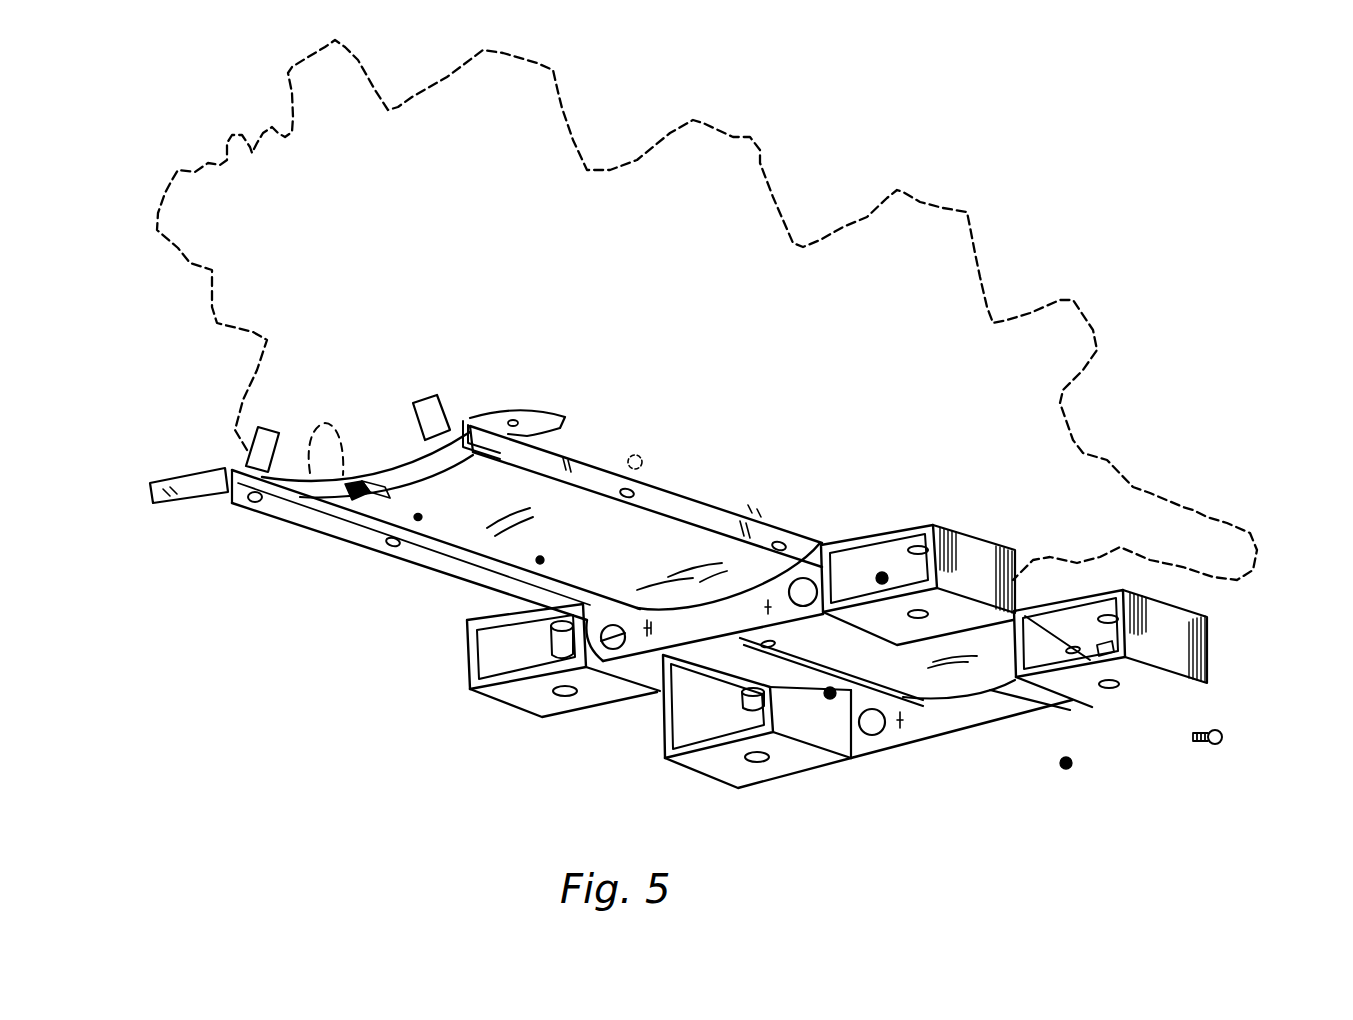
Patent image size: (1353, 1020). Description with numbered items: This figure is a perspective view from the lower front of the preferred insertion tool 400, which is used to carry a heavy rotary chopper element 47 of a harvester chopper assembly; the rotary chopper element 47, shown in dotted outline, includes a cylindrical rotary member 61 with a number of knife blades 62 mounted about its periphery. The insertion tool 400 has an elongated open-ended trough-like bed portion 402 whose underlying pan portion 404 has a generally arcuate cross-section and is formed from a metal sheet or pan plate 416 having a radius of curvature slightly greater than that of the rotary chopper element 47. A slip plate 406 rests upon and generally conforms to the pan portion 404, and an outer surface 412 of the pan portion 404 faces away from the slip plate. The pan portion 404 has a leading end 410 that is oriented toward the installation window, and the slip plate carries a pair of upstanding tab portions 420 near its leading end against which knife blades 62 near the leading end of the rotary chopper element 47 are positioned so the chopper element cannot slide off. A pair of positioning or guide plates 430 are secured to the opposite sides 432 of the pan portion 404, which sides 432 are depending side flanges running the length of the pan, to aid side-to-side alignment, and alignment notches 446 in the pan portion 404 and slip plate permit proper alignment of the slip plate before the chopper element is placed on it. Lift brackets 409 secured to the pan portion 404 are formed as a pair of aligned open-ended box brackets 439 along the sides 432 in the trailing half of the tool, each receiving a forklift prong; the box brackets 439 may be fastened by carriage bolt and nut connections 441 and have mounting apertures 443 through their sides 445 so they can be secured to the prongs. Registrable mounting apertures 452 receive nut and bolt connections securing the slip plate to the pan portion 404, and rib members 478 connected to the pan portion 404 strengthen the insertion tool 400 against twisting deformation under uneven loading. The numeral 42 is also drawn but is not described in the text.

The rotary chopper element 47 is at (762, 157).
The rotary member 61 is at (885, 303).
The knife blades 62 is at (1068, 342).
The insertion tool 400 is at (183, 521).
The bed portion 402 is at (357, 527).
The pan portion 404 is at (450, 520).
The slip plate 406 is at (300, 476).
The lift brackets 409 is at (967, 763).
The leading end 410 is at (392, 462).
The outer surface 412 is at (342, 561).
The pan plate 416 is at (366, 462).
The tab portions 420 is at (243, 470).
The tab 42 is at (445, 400).
The guide plates 430 is at (197, 473).
The sides 432 is at (588, 473).
The box brackets 439 is at (1122, 705).
The carriage bolt and nut connections 441 is at (1207, 748).
The mounting apertures 443 is at (918, 612).
The sides 445 is at (468, 688).
The alignment notches 446 is at (327, 545).
The mounting apertures 452 is at (418, 516).
The rib members 478 is at (723, 622).